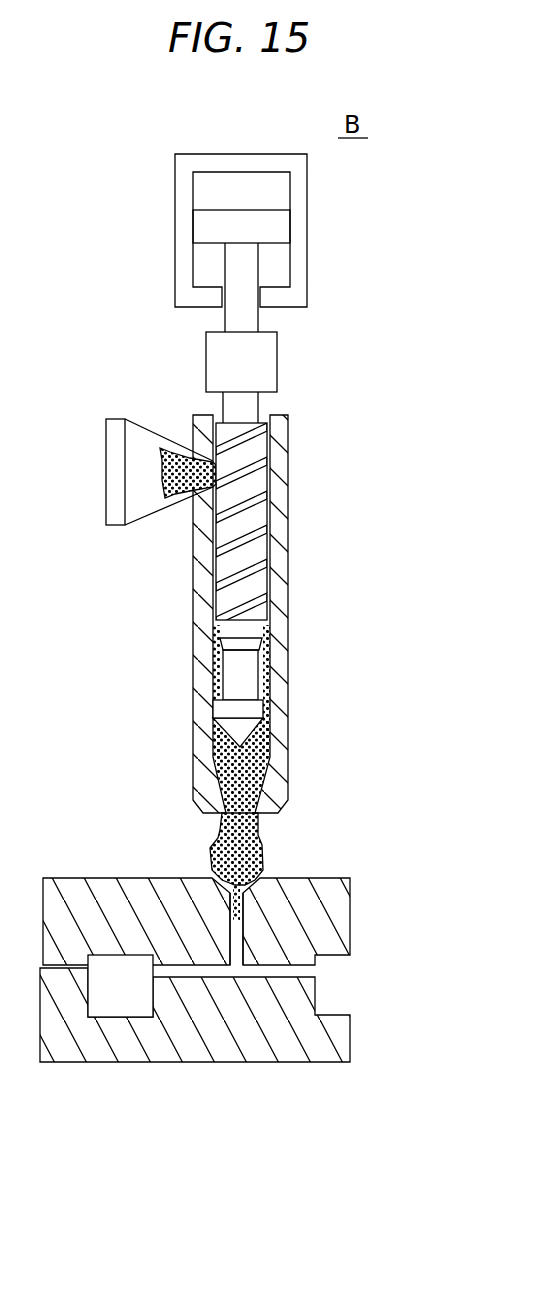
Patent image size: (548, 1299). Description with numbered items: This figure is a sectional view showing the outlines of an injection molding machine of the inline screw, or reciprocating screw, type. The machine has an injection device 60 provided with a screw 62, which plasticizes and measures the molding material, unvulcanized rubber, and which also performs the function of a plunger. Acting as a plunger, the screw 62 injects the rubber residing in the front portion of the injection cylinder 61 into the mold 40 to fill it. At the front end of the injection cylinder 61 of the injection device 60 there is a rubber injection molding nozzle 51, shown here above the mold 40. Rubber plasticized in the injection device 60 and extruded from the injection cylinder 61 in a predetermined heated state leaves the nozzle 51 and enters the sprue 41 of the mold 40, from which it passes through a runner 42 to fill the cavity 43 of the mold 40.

The injection device 60 is at (245, 483).
The injection cylinder 61 is at (277, 686).
The screw 62 is at (246, 594).
The rubber injection molding nozzle 51 is at (220, 833).
The mold 40 is at (85, 876).
The sprue 41 is at (243, 928).
The runner 42 is at (193, 992).
The cavity 43 is at (120, 997).